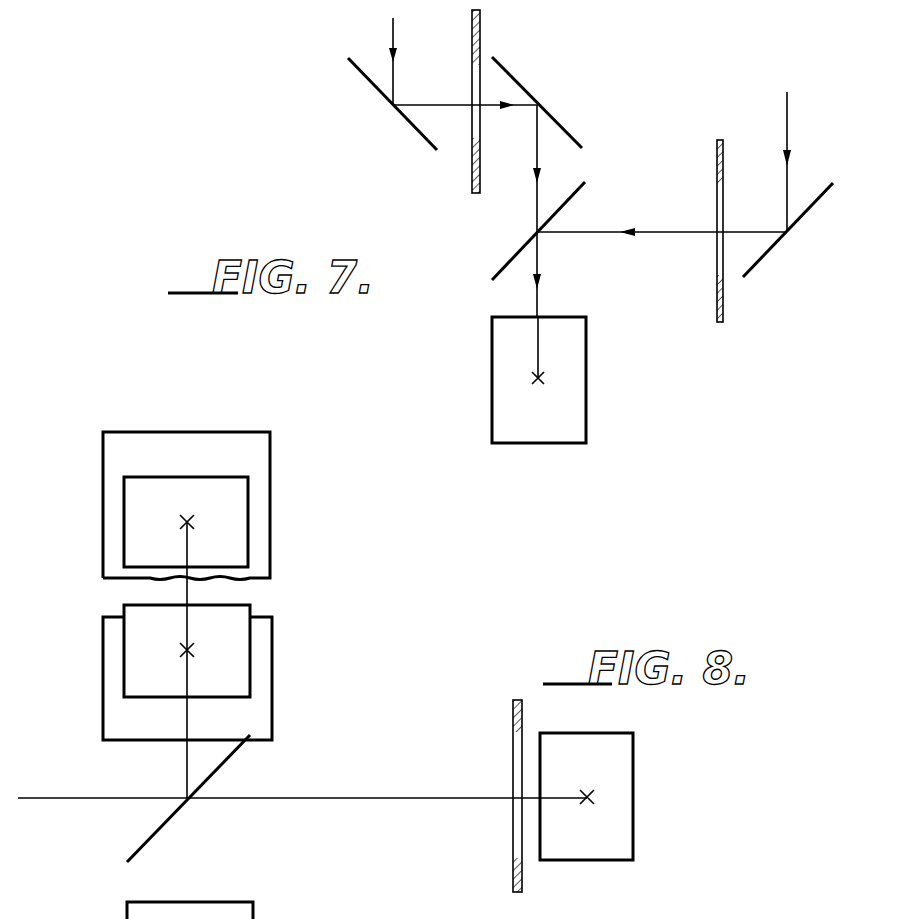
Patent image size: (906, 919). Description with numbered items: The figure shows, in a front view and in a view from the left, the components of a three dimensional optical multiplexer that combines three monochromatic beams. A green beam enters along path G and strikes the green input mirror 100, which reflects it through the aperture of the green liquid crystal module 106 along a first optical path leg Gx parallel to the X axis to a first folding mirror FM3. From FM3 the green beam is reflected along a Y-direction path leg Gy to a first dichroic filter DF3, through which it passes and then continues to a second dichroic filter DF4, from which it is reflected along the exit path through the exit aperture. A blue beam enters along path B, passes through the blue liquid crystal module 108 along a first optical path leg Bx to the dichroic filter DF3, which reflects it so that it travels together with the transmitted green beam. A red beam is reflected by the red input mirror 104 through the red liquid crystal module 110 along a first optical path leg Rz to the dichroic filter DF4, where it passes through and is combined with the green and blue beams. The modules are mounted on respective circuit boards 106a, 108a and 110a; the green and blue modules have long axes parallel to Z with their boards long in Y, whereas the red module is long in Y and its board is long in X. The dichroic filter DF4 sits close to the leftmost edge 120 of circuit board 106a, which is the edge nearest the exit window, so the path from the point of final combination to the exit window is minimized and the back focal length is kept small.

In FIG. 7, the green input mirror 100 is at (380, 90).
In FIG. 7, the green liquid crystal module 106 is at (474, 146).
In FIG. 8, the green liquid crystal module 106 is at (240, 518).
In FIG. 7, the circuit board 106a is at (480, 30).
In FIG. 8, the circuit board 106a is at (260, 458).
In FIG. 7, the blue liquid crystal module 108 is at (717, 196).
In FIG. 8, the blue liquid crystal module 108 is at (240, 648).
In FIG. 7, the circuit board 108a is at (723, 306).
In FIG. 8, the circuit board 108a is at (265, 707).
In FIG. 7, the red liquid crystal module 110 is at (586, 424).
In FIG. 8, the red liquid crystal module 110 is at (510, 847).
In FIG. 8, the circuit board 110a is at (510, 906).
In FIG. 8, the red input mirror 104 is at (632, 770).
In FIG. 8, the leftmost edge 120 is at (103, 518).
In FIG. 7, the first folding mirror FM3 is at (520, 82).
In FIG. 7, the first dichroic filter DF3 is at (516, 248).
In FIG. 8, the second dichroic filter DF4 is at (160, 836).
In FIG. 7, the green input beam path G is at (393, 32).
In FIG. 7, the green beam optical path leg Gx is at (480, 106).
In FIG. 7, the green beam Y-direction path leg Gy is at (538, 150).
In FIG. 8, the green beam Y-direction path leg Gy is at (188, 592).
In FIG. 7, the blue input beam path B is at (787, 134).
In FIG. 7, the blue beam optical path leg Bx is at (640, 234).
In FIG. 8, the red beam optical path leg Rz is at (370, 797).